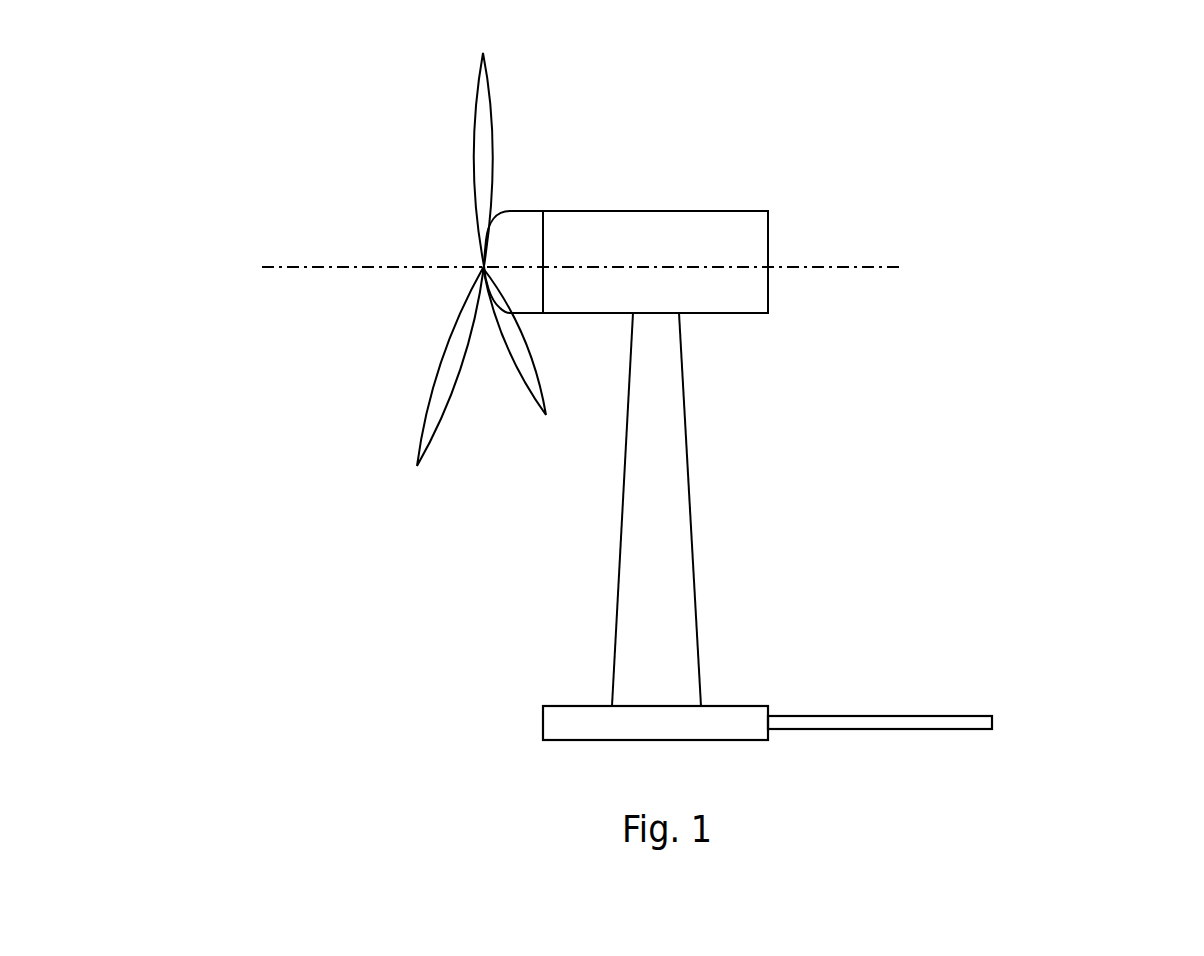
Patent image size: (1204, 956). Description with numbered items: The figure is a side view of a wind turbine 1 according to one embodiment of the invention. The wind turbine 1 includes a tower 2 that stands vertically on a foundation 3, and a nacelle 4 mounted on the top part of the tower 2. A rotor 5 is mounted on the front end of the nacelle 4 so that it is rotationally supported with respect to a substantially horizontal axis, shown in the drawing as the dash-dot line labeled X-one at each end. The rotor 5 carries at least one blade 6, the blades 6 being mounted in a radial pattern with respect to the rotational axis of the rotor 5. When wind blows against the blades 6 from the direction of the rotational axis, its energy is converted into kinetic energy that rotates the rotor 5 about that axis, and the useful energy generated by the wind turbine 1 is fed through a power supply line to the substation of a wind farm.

The wind turbine 1 is at (982, 166).
The tower 2 is at (690, 447).
The foundation 3 is at (577, 705).
The nacelle 4 is at (678, 208).
The rotor 5 is at (502, 281).
The blade 6 is at (475, 178).